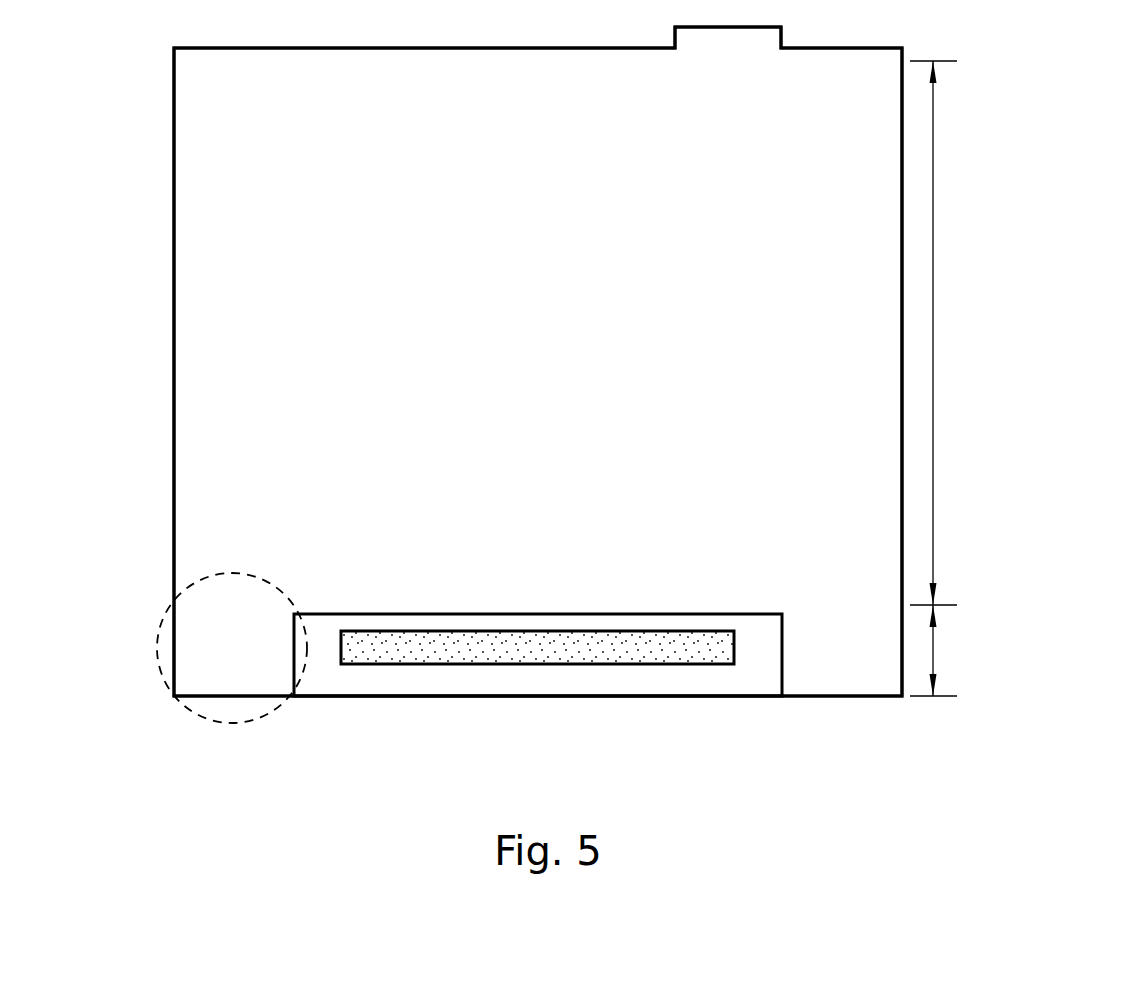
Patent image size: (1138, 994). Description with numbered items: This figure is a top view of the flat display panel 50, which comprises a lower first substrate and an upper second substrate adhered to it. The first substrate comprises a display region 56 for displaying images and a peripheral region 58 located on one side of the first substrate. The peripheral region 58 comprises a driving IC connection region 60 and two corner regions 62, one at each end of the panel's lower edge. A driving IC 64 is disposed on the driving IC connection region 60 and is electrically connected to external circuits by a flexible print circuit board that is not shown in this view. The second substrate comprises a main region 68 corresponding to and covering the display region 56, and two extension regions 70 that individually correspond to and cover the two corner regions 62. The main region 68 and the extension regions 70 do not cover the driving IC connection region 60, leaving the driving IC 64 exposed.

The flat display panel 50 is at (1002, 112).
The main region 68 is at (198, 116).
The driving IC connection region 60 is at (294, 698).
The driving IC 64 is at (370, 643).
The extension region 70 is at (160, 632).
The corner region 62 is at (294, 698).
The display region 56 is at (942, 333).
The peripheral region 58 is at (942, 650).